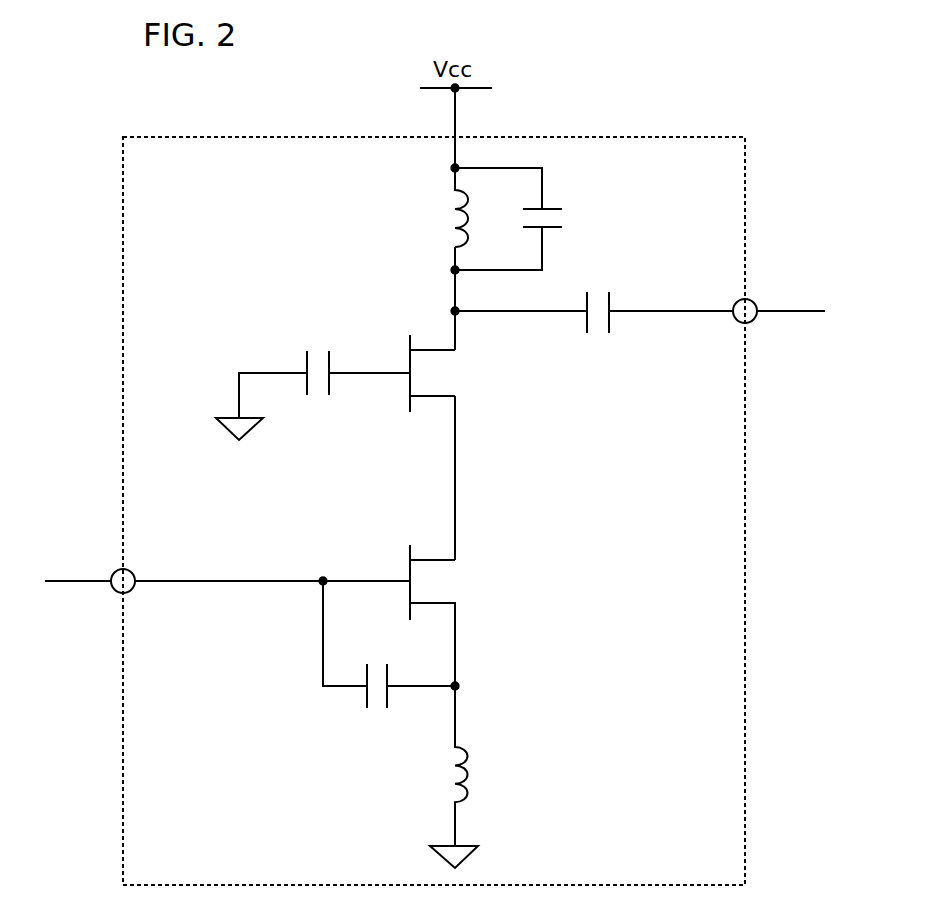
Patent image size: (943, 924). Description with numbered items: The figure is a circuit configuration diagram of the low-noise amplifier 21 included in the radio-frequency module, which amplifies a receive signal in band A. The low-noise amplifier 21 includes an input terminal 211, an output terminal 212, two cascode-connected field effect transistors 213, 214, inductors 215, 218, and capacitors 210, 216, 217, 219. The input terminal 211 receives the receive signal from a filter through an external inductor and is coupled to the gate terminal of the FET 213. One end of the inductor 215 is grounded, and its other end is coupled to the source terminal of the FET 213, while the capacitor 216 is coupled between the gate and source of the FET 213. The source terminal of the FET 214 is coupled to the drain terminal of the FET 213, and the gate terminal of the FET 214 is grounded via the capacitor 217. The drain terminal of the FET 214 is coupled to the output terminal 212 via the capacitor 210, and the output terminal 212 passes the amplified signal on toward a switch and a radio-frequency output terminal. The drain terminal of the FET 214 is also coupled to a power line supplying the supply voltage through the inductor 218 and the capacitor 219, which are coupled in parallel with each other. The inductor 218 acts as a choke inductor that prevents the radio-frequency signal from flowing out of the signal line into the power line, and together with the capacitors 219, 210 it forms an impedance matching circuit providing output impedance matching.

The low-noise amplifier 21 is at (200, 136).
The capacitor 210 is at (605, 337).
The input terminal 211 is at (112, 571).
The output terminal 212 is at (757, 300).
The field effect transistor 213 is at (420, 540).
The field effect transistor 214 is at (420, 333).
The inductor 215 is at (482, 778).
The capacitor 216 is at (375, 712).
The capacitor 217 is at (318, 397).
The inductor 218 is at (443, 218).
The capacitor 219 is at (562, 219).